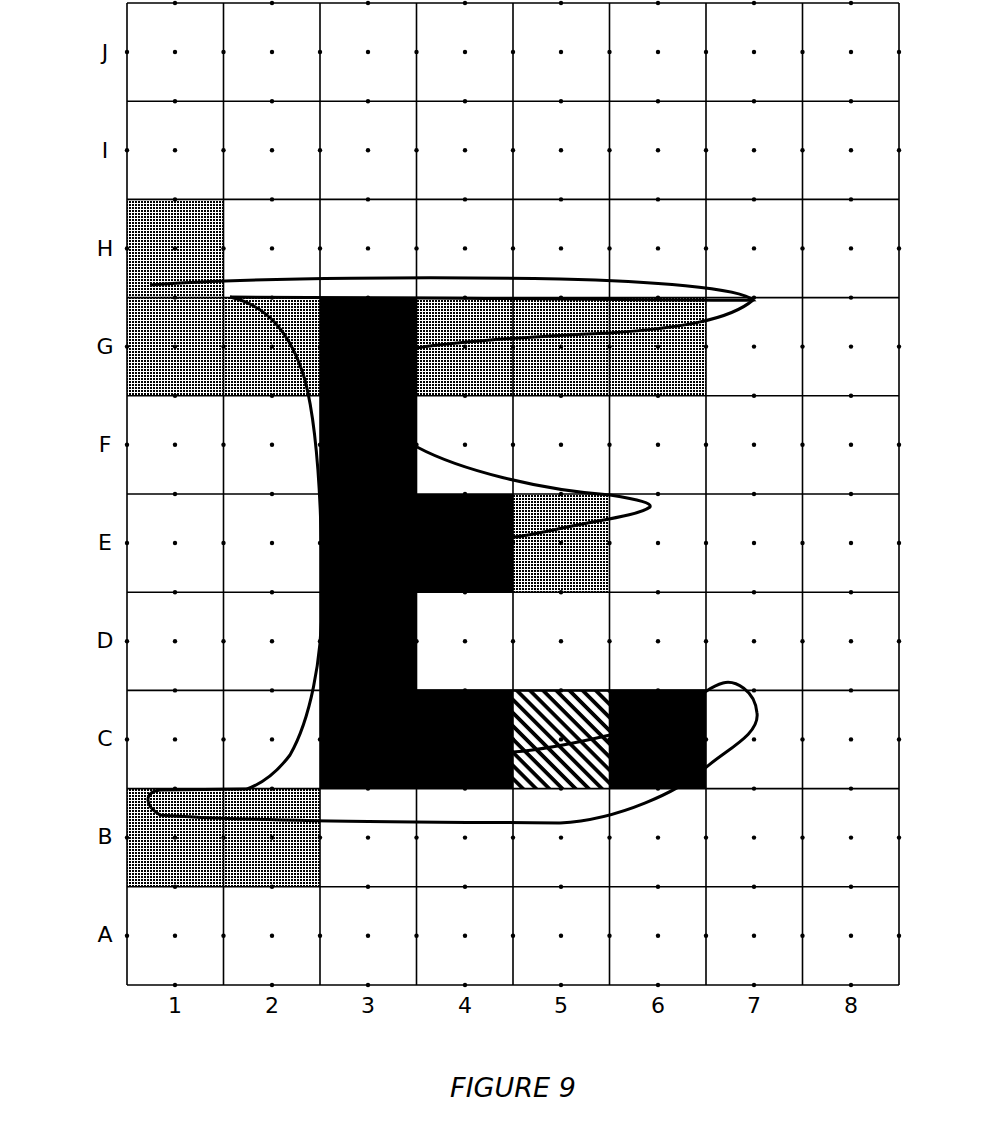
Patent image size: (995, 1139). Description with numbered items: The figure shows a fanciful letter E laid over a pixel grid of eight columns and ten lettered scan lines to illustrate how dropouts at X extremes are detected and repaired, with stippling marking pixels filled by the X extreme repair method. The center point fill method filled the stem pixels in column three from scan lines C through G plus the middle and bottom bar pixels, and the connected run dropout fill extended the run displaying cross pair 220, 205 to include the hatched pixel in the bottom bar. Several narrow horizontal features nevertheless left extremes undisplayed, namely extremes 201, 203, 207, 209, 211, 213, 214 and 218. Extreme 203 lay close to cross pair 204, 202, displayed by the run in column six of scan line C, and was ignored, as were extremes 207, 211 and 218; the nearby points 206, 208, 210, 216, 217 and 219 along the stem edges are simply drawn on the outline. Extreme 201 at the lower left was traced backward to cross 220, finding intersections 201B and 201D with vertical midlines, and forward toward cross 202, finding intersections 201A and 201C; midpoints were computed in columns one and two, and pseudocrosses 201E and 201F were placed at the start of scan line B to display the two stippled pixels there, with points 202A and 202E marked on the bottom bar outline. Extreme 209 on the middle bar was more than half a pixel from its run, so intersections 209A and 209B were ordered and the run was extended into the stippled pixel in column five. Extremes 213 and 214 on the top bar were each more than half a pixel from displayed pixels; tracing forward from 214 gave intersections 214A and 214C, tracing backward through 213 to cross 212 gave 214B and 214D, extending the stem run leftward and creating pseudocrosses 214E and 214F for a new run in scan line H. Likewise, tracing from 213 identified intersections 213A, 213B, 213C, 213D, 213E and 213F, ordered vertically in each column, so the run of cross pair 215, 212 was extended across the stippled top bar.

The extreme 201 is at (130, 789).
The intersection 201A is at (177, 810).
The intersection 201B is at (172, 786).
The intersection 201C is at (322, 806).
The intersection 201D is at (270, 760).
The pseudocross 201E is at (163, 835).
The pseudocross 201F is at (285, 833).
The cross 202 is at (733, 750).
The zone point 202A is at (560, 823).
The zone point 202E is at (565, 745).
The extreme 203 is at (760, 713).
The cross 204 is at (567, 745).
The cross 205 is at (472, 689).
The stem edge point 206 is at (417, 640).
The extreme 207 is at (417, 630).
The middle bar corner 208 is at (507, 593).
The extreme 209 is at (650, 507).
The intersection 209A is at (567, 528).
The intersection 209B is at (562, 487).
The middle bar edge 210 is at (420, 448).
The extreme 211 is at (417, 418).
The cross 212 is at (430, 347).
The extreme 213 is at (760, 302).
The intersection 213A is at (472, 340).
The intersection 213B is at (465, 279).
The intersection 213C is at (562, 340).
The intersection 213D is at (562, 279).
The intersection 213E is at (658, 338).
The intersection 213F is at (657, 281).
The extreme 214 is at (150, 285).
The intersection 214A is at (163, 293).
The intersection 214B is at (177, 280).
The intersection 214C is at (277, 330).
The intersection 214D is at (273, 278).
The pseudocross 214E is at (155, 243).
The pseudocross 214F is at (197, 243).
The cross 215 is at (277, 350).
The stem left edge point 216 is at (308, 445).
The stem left edge point 217 is at (313, 540).
The extreme 218 is at (320, 607).
The stem left edge point 219 is at (317, 637).
The cross 220 is at (293, 737).